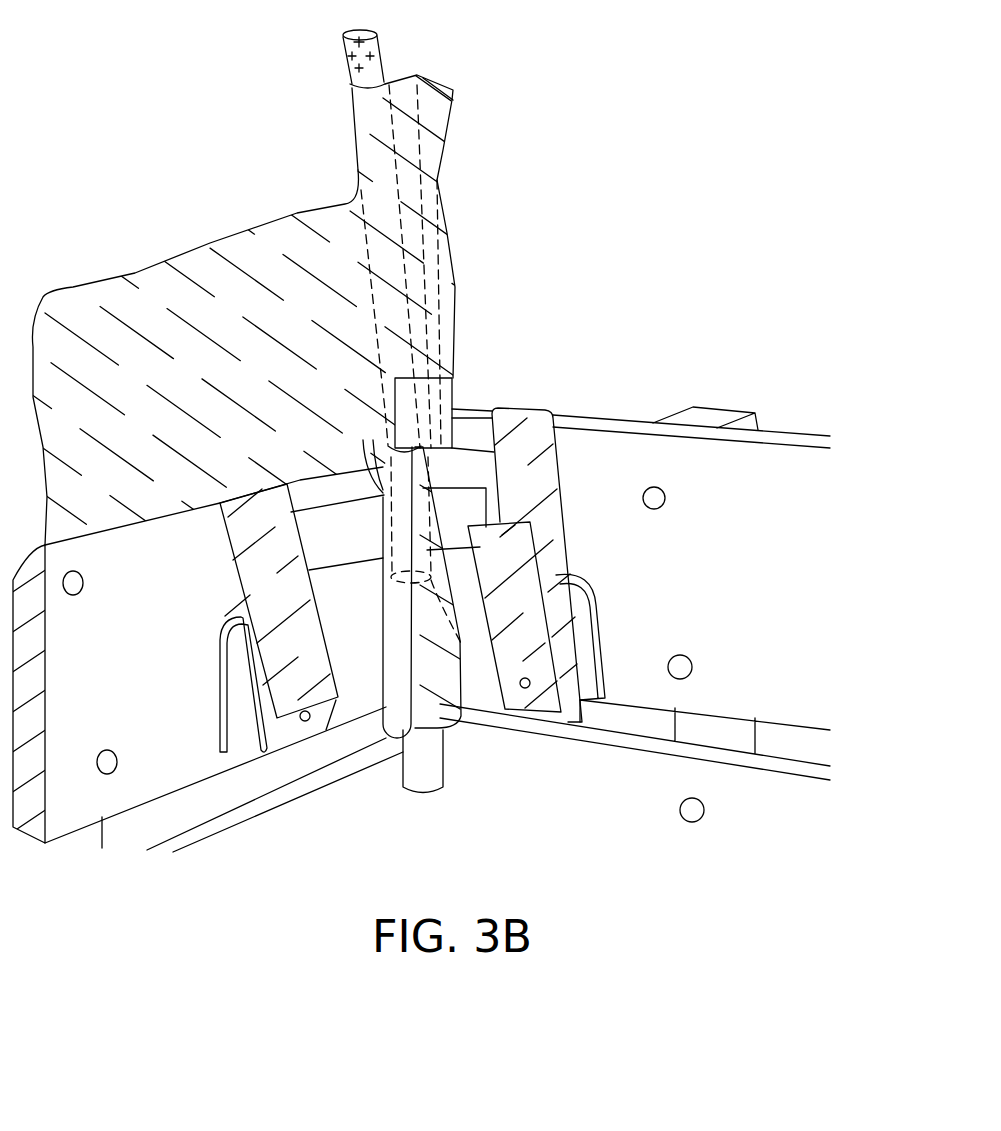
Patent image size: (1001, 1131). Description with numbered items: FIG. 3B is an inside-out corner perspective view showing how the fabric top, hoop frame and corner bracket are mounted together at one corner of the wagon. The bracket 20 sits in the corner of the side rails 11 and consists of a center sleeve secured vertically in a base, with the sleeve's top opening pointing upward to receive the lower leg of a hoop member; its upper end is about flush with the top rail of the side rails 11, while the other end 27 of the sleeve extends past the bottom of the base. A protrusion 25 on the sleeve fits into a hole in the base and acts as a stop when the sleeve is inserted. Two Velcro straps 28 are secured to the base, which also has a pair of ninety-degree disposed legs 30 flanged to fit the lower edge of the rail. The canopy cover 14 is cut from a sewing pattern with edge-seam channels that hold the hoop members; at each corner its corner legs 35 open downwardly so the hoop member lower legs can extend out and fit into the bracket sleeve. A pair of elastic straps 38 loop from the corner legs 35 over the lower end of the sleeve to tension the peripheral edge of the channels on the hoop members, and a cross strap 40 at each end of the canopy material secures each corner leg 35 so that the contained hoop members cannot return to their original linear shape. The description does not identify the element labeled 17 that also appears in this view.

The side rails 11 is at (648, 425).
The canopy cover 14 is at (447, 72).
The wire pin 17 is at (381, 38).
The bracket 20 is at (507, 766).
The protrusion 25 is at (578, 653).
The other end 27 is at (428, 792).
The Velcro straps 28 is at (240, 576).
The legs 30 is at (243, 700).
The corner legs 35 is at (411, 147).
The elastic straps 38 is at (438, 710).
The cross strap 40 is at (188, 392).